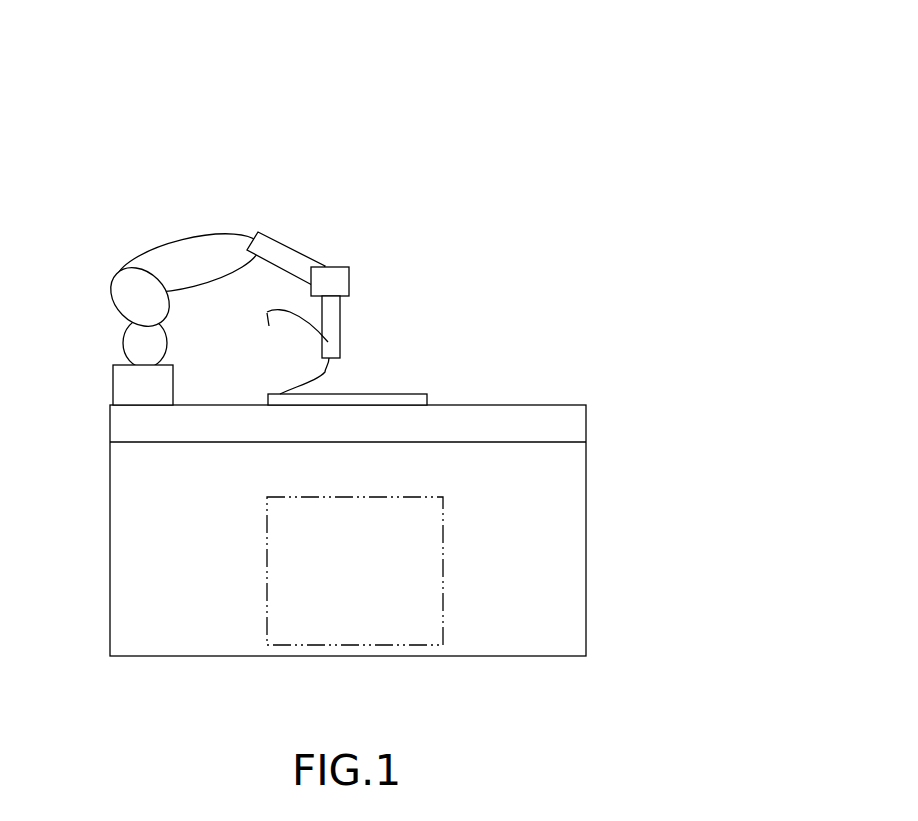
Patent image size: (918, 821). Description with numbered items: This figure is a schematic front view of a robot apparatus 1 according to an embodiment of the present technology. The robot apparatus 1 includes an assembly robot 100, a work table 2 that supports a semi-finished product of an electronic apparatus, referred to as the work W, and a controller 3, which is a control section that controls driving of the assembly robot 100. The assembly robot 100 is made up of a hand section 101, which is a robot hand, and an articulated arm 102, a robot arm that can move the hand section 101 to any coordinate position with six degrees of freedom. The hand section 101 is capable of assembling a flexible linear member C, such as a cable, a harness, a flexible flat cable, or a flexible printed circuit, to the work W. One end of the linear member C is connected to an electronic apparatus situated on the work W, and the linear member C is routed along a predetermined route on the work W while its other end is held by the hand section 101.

The robot apparatus 1 is at (537, 82).
The work table 2 is at (586, 421).
The controller 3 is at (443, 555).
The assembly robot 100 is at (313, 184).
The hand section 101 is at (340, 326).
The articulated arm 102 is at (190, 243).
The work W is at (414, 393).
The linear member C is at (327, 369).